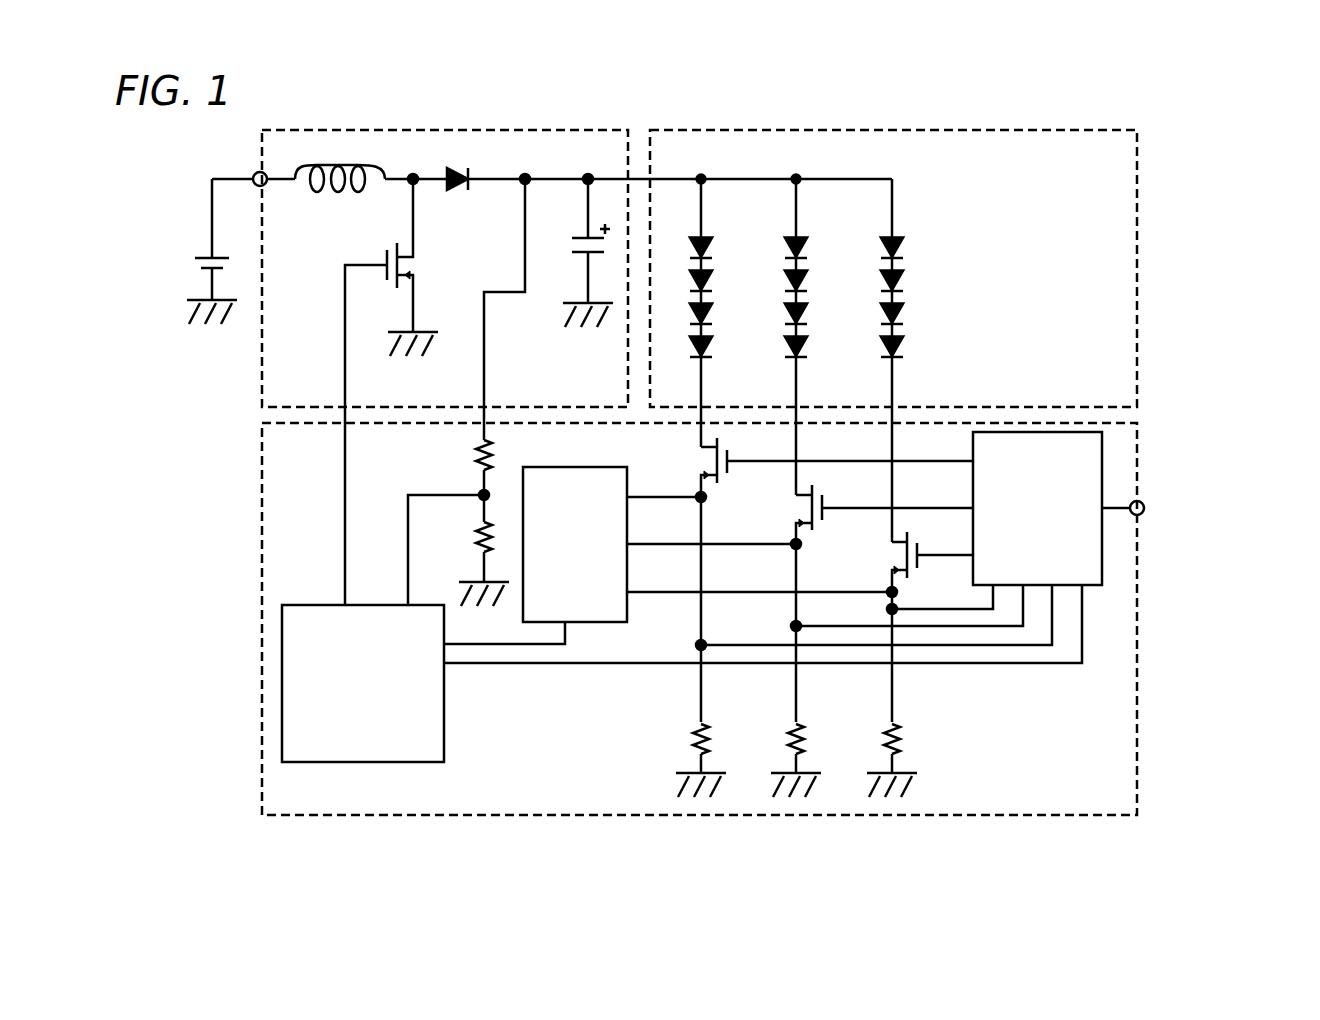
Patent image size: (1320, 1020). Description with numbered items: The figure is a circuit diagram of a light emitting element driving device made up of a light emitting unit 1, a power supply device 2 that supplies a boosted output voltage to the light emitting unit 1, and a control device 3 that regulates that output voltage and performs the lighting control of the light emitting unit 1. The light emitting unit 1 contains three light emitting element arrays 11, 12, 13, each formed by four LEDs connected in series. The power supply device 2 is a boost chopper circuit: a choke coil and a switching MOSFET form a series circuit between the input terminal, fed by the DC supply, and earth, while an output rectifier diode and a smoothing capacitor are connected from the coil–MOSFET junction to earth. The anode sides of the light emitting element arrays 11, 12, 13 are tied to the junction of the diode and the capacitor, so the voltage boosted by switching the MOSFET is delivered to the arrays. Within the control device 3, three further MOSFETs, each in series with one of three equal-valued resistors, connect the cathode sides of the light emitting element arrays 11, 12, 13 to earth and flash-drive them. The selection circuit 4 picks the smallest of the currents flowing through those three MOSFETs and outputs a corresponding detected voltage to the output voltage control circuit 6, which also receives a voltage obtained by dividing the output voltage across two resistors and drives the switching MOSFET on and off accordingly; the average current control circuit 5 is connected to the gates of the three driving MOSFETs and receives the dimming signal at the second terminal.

The light emitting unit 1 is at (1012, 130).
The power supply device 2 is at (600, 129).
The control device 3 is at (935, 815).
The selection circuit 4 is at (573, 467).
The average current control circuit 5 is at (1095, 587).
The output voltage control circuit 6 is at (313, 605).
The light emitting element array 11 is at (715, 237).
The light emitting element array 12 is at (810, 237).
The light emitting element array 13 is at (906, 237).